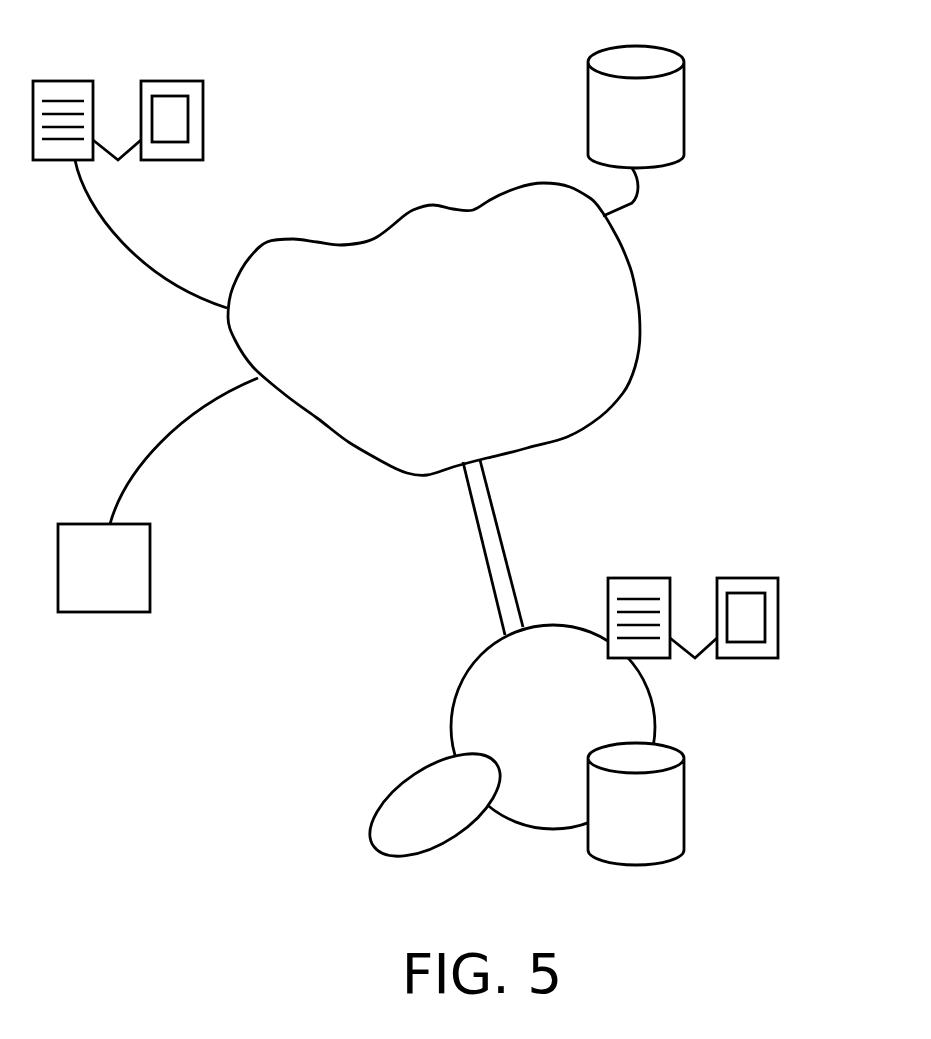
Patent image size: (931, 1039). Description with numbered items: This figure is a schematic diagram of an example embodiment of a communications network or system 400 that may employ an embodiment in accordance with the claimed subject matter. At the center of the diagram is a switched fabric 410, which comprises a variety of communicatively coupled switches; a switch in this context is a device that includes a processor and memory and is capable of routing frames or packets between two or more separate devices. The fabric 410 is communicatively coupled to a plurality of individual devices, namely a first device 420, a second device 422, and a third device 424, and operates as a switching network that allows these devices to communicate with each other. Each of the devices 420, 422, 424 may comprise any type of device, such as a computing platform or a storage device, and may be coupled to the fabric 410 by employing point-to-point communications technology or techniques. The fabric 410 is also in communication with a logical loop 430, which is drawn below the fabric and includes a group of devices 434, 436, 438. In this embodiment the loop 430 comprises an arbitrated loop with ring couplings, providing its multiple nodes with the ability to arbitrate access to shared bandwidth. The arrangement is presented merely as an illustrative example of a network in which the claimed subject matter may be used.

The communications network or system 400 is at (799, 71).
The switched fabric 410 is at (427, 338).
The device 420 is at (93, 81).
The device 422 is at (84, 577).
The device 424 is at (618, 120).
The logical loop 430 is at (525, 728).
The device 434 is at (412, 810).
The device 436 is at (618, 815).
The device 438 is at (670, 578).